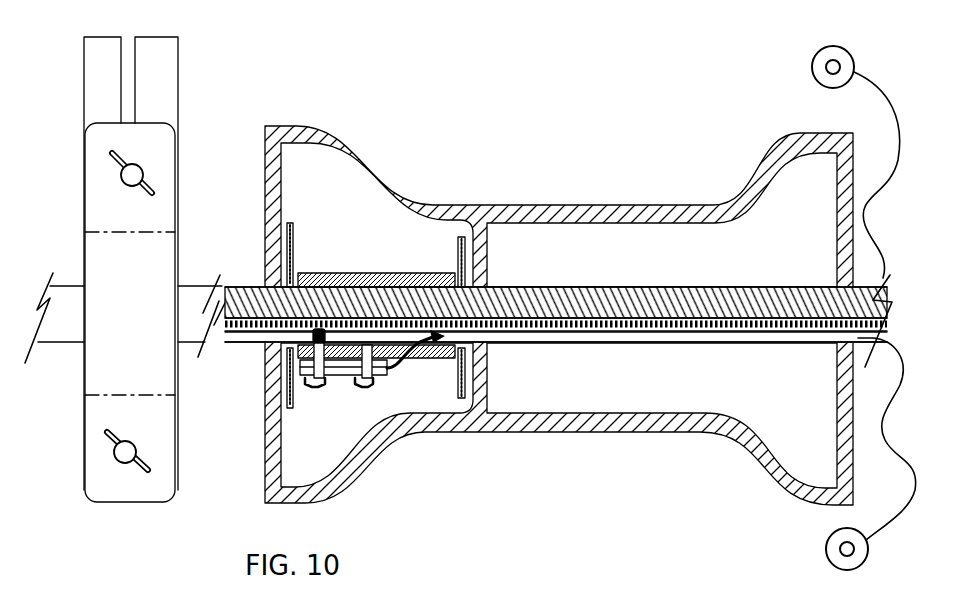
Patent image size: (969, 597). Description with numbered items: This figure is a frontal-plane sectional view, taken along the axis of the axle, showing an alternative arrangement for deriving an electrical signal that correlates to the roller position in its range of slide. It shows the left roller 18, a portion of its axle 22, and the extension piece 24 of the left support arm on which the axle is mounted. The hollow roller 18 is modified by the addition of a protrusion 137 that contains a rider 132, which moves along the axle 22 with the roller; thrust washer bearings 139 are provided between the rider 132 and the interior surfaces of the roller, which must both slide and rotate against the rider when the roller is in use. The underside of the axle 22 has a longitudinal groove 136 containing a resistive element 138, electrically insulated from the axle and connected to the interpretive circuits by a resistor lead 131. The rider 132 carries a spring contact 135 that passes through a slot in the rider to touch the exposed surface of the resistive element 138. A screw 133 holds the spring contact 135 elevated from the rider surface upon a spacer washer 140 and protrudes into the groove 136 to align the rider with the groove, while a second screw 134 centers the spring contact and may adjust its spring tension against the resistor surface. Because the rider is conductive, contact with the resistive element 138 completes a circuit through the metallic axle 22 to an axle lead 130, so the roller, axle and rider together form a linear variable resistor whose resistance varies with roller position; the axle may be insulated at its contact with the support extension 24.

The roller 18 is at (246, 463).
The axle 22 is at (458, 362).
The extension piece 24 is at (180, 65).
The axle lead 130 is at (812, 62).
The resistor lead 131 is at (835, 560).
The rider 132 is at (352, 270).
The screw 133 is at (313, 383).
The second screw 134 is at (367, 388).
The spring contact 135 is at (390, 368).
The groove 136 is at (765, 335).
The protrusion 137 is at (480, 385).
The resistive element 138 is at (700, 332).
The thrust washer bearings 139 is at (442, 257).
The spacer washer 140 is at (310, 360).